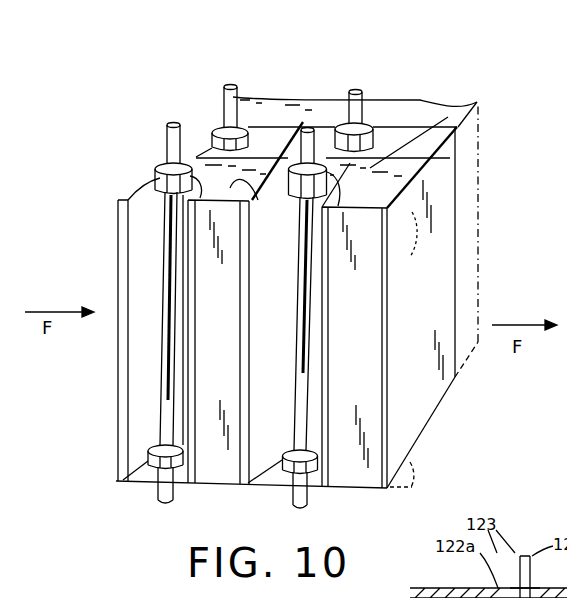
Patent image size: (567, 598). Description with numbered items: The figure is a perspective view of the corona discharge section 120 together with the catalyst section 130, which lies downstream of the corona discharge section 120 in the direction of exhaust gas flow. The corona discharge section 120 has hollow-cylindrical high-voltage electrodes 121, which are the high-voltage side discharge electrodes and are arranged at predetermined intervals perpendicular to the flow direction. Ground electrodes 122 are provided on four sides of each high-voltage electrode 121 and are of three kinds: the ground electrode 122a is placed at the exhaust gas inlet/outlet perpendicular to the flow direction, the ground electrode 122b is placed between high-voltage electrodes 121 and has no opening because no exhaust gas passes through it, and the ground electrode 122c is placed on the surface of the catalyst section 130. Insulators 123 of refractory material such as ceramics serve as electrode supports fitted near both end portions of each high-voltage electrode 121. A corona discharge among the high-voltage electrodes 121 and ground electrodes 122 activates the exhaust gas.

The corona discharge section 120 is at (262, 118).
The high-voltage electrode 121 is at (226, 103).
The ground electrode 122 is at (116, 229).
The ground electrode 122a is at (116, 276).
The ground electrode 122b is at (168, 147).
The ground electrode 122c is at (228, 170).
The insulator 123 is at (158, 178).
The catalyst section 130 is at (438, 126).